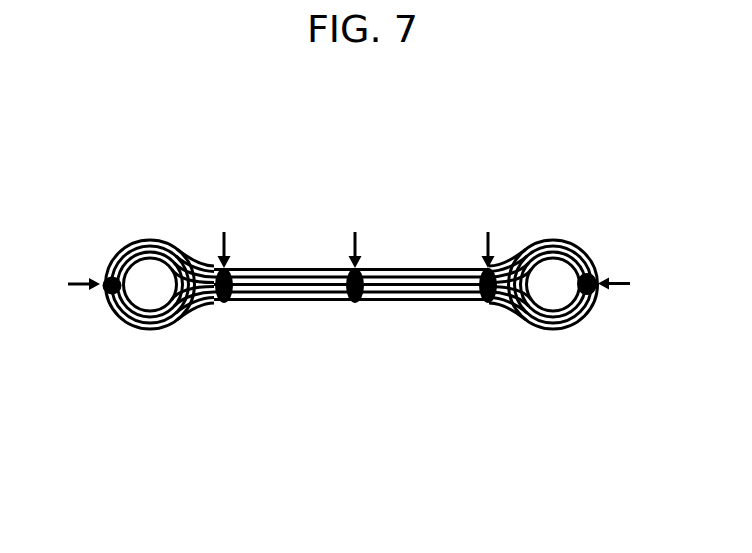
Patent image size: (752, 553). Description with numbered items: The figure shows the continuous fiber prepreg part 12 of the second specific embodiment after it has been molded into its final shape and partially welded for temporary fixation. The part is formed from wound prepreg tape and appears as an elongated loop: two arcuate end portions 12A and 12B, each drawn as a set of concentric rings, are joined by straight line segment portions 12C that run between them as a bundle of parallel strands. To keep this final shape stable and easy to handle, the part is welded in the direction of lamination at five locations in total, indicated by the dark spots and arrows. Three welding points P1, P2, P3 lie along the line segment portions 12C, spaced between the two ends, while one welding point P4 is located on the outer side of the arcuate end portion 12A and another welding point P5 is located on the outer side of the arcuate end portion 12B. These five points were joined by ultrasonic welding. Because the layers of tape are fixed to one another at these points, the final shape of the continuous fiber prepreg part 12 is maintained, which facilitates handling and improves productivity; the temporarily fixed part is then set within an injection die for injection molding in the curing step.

The continuous fiber prepreg part 12 is at (410, 265).
The arcuate end portion 12A is at (148, 240).
The arcuate end portion 12B is at (551, 240).
The line segment portion 12C is at (289, 284).
The welding point P1 is at (227, 303).
The welding point P2 is at (354, 303).
The welding point P3 is at (488, 303).
The welding point P4 is at (106, 295).
The welding point P5 is at (592, 298).